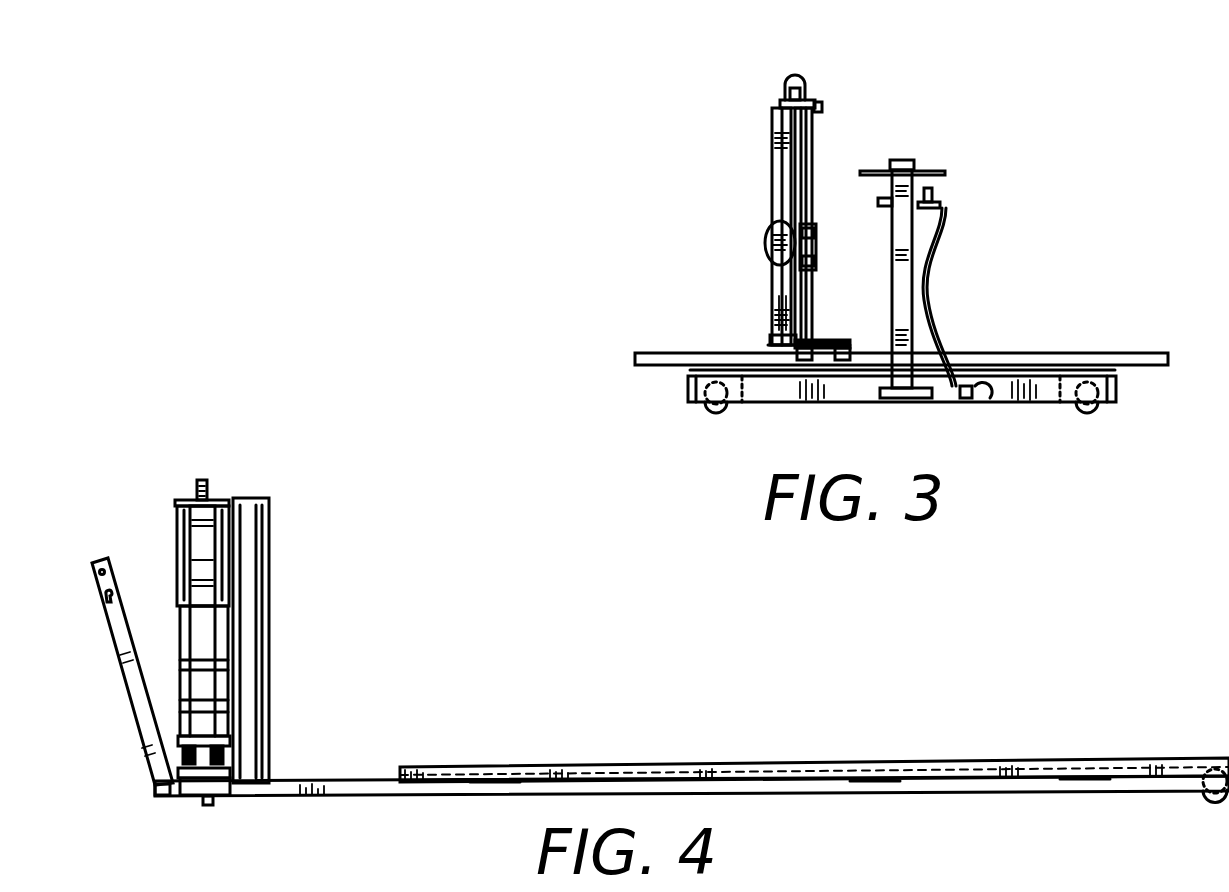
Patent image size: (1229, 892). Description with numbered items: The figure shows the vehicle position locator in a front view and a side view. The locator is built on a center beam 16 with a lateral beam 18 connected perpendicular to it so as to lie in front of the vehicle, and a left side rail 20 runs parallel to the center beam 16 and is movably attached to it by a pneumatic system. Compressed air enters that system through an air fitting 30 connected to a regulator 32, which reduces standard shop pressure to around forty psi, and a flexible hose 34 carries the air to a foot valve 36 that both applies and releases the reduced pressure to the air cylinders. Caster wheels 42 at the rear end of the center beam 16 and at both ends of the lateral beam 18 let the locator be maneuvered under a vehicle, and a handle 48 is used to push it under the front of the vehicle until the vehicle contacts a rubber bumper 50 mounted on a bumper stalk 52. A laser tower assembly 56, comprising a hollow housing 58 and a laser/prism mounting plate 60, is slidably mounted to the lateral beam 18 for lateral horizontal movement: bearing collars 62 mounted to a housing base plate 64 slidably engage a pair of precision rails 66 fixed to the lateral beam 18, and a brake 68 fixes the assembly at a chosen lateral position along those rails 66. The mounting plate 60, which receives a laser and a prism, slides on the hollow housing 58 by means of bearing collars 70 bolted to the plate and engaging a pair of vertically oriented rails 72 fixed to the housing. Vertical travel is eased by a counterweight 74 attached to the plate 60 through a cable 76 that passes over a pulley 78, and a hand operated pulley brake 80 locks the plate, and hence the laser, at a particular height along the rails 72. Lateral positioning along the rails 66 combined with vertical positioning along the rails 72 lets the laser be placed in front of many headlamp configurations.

In FIG. 4, the center beam 16 is at (333, 780).
In FIG. 3, the lateral beam 18 is at (845, 402).
In FIG. 4, the lateral beam 18 is at (160, 794).
In FIG. 4, the left side rail 20 is at (612, 767).
In FIG. 3, the air fitting 30 is at (880, 202).
In FIG. 3, the regulator 32 is at (935, 195).
In FIG. 4, the regulator 32 is at (106, 602).
In FIG. 3, the flexible hose 34 is at (930, 296).
In FIG. 3, the foot valve 36 is at (990, 400).
In FIG. 3, the caster wheels 42 is at (716, 406).
In FIG. 4, the caster wheels 42 is at (207, 806).
In FIG. 3, the handle 48 is at (930, 171).
In FIG. 4, the handle 48 is at (100, 573).
In FIG. 4, the bumper 50 is at (270, 655).
In FIG. 4, the bumper stalk 52 is at (247, 600).
In FIG. 3, the laser tower assembly 56 is at (776, 56).
In FIG. 4, the laser tower assembly 56 is at (194, 453).
In FIG. 3, the hollow housing 58 is at (773, 148).
In FIG. 3, the laser/prism mounting plate 60 is at (816, 246).
In FIG. 4, the laser/prism mounting plate 60 is at (200, 640).
In FIG. 3, the bearing collars 62 is at (818, 340).
In FIG. 3, the housing base plate 64 is at (770, 340).
In FIG. 3, the rails 66 is at (1140, 353).
In FIG. 3, the brake 68 is at (784, 306).
In FIG. 3, the bearing collars 70 is at (766, 257).
In FIG. 3, the vertically oriented rails 72 is at (812, 168).
In FIG. 4, the vertically oriented rails 72 is at (208, 556).
In FIG. 3, the counterweight 74 is at (772, 185).
In FIG. 3, the cable 76 is at (778, 103).
In FIG. 3, the pulley 78 is at (797, 78).
In FIG. 4, the pulley 78 is at (207, 481).
In FIG. 3, the hand operated pulley brake 80 is at (820, 104).
In FIG. 4, the hand operated pulley brake 80 is at (200, 500).